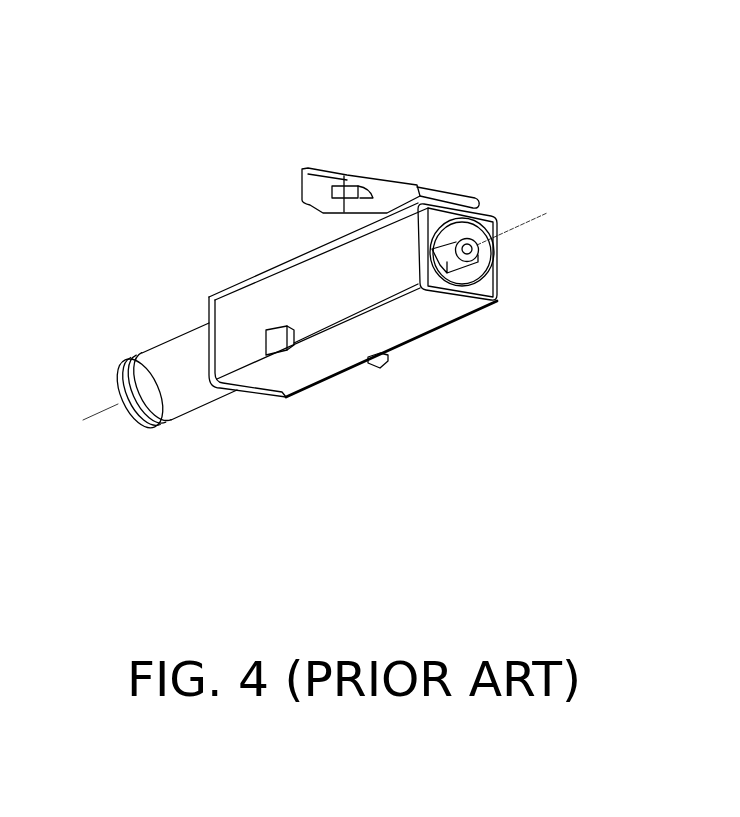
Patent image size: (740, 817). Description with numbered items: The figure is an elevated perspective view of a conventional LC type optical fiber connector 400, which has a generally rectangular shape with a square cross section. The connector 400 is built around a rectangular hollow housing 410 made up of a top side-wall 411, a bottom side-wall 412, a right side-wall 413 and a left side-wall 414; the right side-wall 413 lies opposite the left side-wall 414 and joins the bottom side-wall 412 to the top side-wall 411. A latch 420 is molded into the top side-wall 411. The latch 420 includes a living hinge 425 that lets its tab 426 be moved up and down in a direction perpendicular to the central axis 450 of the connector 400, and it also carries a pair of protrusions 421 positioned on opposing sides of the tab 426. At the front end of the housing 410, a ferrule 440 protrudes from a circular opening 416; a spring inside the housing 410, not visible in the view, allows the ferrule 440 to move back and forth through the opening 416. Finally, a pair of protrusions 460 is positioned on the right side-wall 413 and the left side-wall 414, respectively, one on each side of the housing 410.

The LC type optical fiber connector 400 is at (155, 124).
The housing 410 is at (398, 380).
The top side-wall 411 is at (480, 207).
The bottom side-wall 412 is at (423, 317).
The right side-wall 413 is at (500, 300).
The left side-wall 414 is at (342, 277).
The circular opening 416 is at (498, 272).
The latch 420 is at (312, 140).
The protrusions 421 is at (346, 177).
The living hinge 425 is at (450, 196).
The tab 426 is at (312, 192).
The ferrule 440 is at (477, 268).
The central axis 450 is at (518, 228).
The protrusions 460 is at (367, 367).